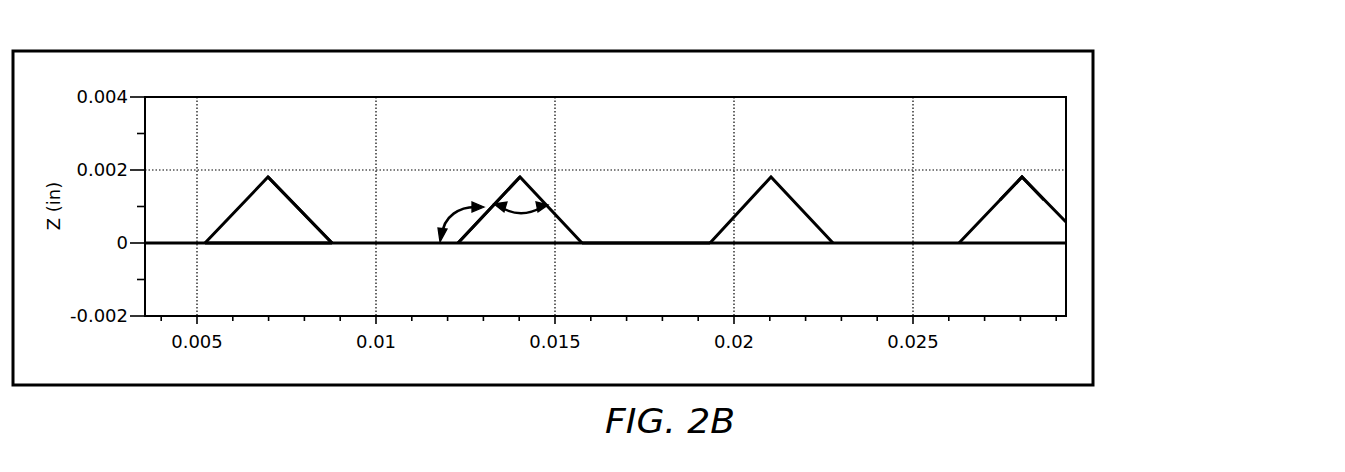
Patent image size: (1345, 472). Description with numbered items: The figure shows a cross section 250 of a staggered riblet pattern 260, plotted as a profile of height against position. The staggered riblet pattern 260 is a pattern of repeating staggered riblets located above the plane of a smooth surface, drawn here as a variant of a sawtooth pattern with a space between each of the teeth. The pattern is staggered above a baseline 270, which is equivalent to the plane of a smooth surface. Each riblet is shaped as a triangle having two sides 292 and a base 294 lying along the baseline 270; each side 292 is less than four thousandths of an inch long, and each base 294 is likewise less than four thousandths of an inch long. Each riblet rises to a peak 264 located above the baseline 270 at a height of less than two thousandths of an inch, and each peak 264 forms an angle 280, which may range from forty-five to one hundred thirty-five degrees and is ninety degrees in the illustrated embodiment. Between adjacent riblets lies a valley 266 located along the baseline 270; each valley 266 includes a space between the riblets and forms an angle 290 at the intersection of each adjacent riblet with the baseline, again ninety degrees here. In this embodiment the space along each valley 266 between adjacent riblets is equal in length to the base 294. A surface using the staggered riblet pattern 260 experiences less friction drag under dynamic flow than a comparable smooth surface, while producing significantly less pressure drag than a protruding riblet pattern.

The cross section 250 is at (1134, 70).
The staggered riblet pattern 260 is at (1053, 209).
The peak 264 is at (1022, 176).
The valley 266 is at (709, 237).
The baseline 270 is at (872, 242).
The angle 280 is at (520, 214).
The angle 290 is at (445, 222).
The side 292 is at (301, 207).
The base 294 is at (264, 233).